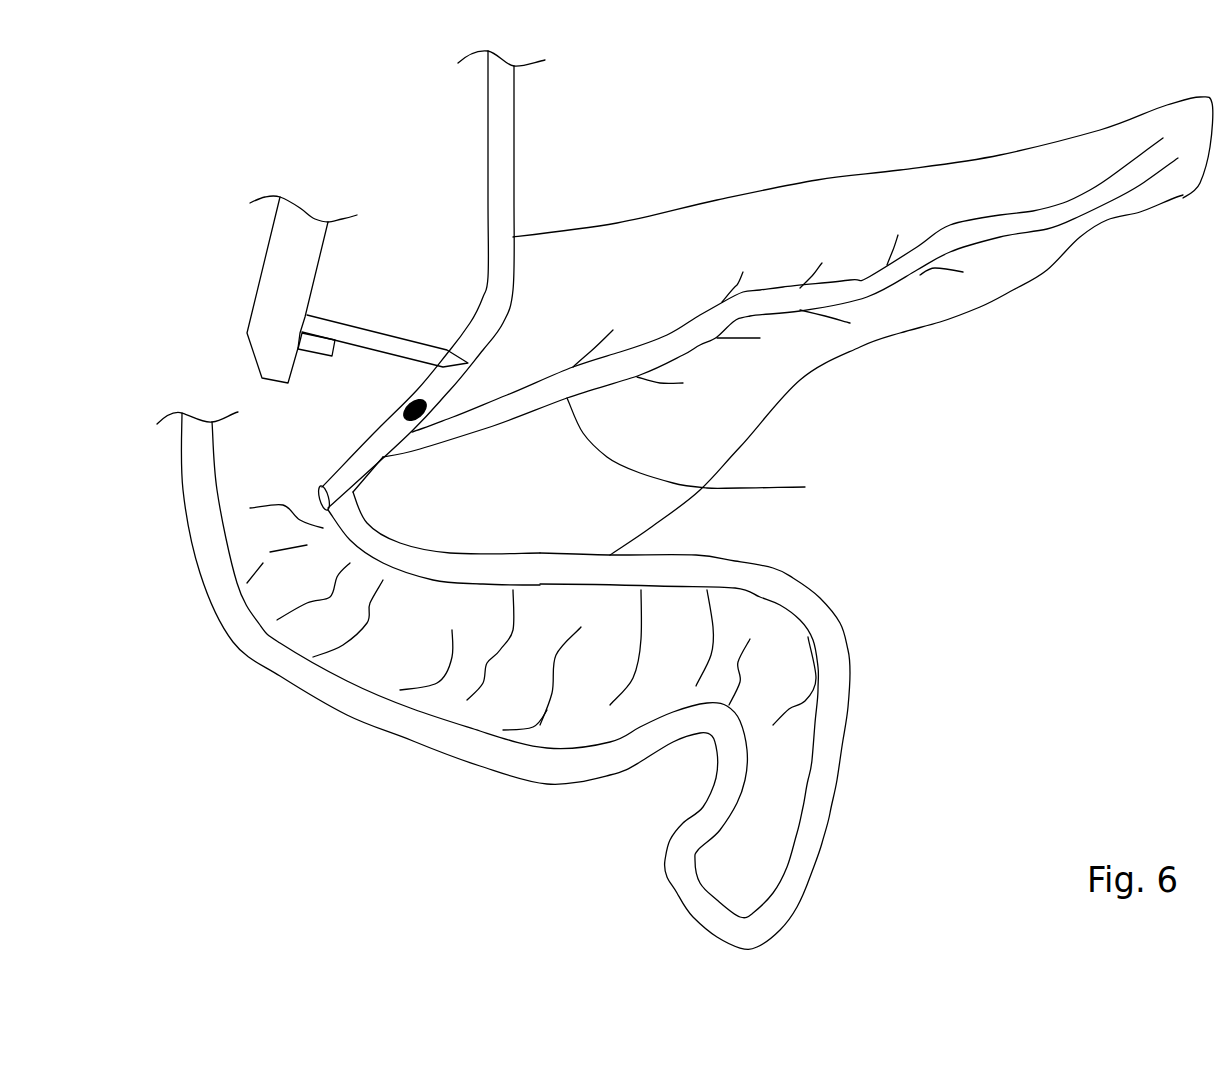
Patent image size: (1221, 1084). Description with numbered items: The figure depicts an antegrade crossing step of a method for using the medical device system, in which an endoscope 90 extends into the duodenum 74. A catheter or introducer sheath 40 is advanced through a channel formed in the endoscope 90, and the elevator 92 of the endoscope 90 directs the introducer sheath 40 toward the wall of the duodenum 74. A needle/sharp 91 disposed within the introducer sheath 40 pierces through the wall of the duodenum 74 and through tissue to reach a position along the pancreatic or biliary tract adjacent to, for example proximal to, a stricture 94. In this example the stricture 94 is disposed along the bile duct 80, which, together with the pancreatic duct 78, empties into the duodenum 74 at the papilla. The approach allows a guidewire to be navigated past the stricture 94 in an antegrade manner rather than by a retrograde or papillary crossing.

The introducer sheath 40 is at (341, 320).
The duodenum 74 is at (337, 693).
The pancreatic duct 78 is at (765, 320).
The common bile duct 80 is at (513, 292).
The endoscope 90 is at (263, 297).
The needle/sharp 91 is at (471, 348).
The elevator 92 is at (322, 349).
The stricture 94 is at (403, 405).